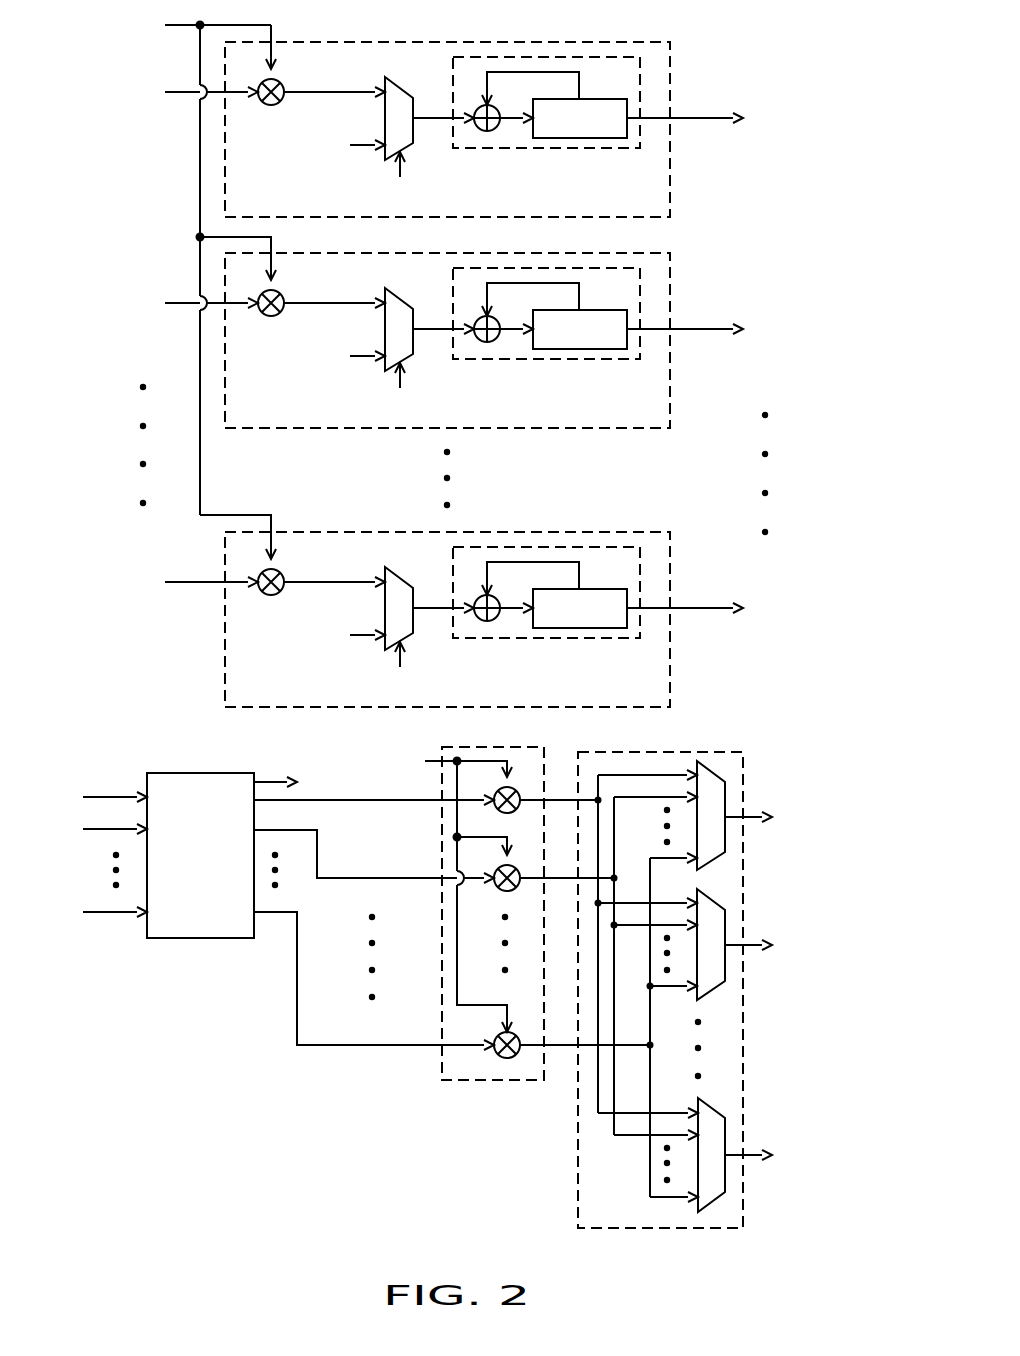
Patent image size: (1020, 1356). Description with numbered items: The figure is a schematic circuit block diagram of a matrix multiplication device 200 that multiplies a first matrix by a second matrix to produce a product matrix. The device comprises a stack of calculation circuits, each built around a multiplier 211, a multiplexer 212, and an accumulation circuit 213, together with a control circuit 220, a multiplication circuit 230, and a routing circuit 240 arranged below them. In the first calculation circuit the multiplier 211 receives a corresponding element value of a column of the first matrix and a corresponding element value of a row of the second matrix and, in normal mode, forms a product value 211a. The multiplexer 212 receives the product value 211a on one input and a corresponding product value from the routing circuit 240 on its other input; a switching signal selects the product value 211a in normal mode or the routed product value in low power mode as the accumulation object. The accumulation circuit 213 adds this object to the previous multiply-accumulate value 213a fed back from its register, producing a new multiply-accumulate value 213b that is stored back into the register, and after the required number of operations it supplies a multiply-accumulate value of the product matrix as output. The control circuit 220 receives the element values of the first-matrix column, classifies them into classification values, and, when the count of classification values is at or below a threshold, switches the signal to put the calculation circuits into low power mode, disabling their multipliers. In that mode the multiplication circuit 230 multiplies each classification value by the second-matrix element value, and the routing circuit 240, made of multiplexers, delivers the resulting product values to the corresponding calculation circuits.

The matrix multiplication device 200 is at (270, 1176).
The multiplier 211 is at (268, 106).
The product value 211a is at (333, 76).
The multiplexer 212 is at (413, 97).
The accumulation circuit 213 is at (548, 150).
The previous corresponding multiply-accumulate value 213a is at (532, 72).
The new corresponding multiply-accumulate value 213b is at (513, 120).
The control circuit 220 is at (202, 938).
The multiplication circuit 230 is at (493, 1082).
The routing circuit 240 is at (578, 1202).